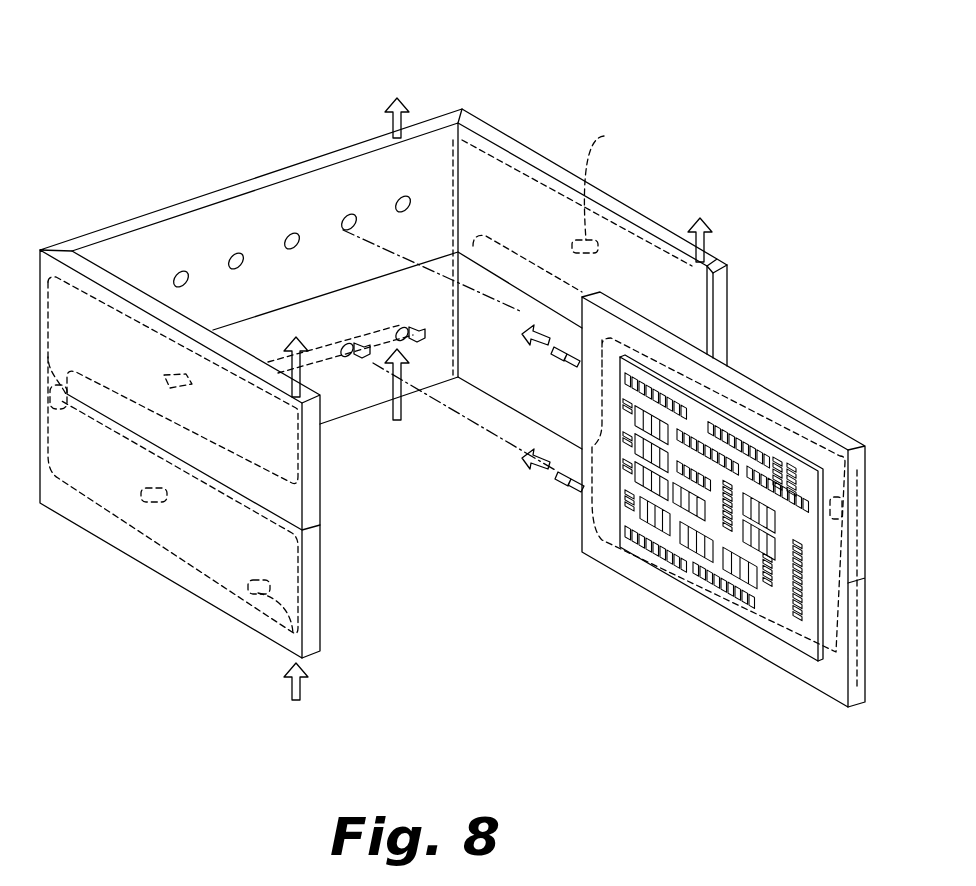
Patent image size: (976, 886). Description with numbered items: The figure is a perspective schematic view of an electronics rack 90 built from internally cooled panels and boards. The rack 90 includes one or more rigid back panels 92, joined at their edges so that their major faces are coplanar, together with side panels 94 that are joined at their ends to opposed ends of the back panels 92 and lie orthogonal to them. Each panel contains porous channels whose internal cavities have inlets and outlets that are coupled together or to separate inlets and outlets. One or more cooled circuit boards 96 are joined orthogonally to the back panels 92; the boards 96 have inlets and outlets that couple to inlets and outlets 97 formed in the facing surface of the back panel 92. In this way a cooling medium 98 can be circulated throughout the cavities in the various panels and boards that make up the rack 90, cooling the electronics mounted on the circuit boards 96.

The electronics rack 90 is at (553, 86).
The back panel 92 is at (190, 194).
The side panel 94 is at (630, 204).
The cooled circuit board 96 is at (799, 409).
The inlets and outlets 97 is at (176, 275).
The cooling medium 98 is at (600, 136).